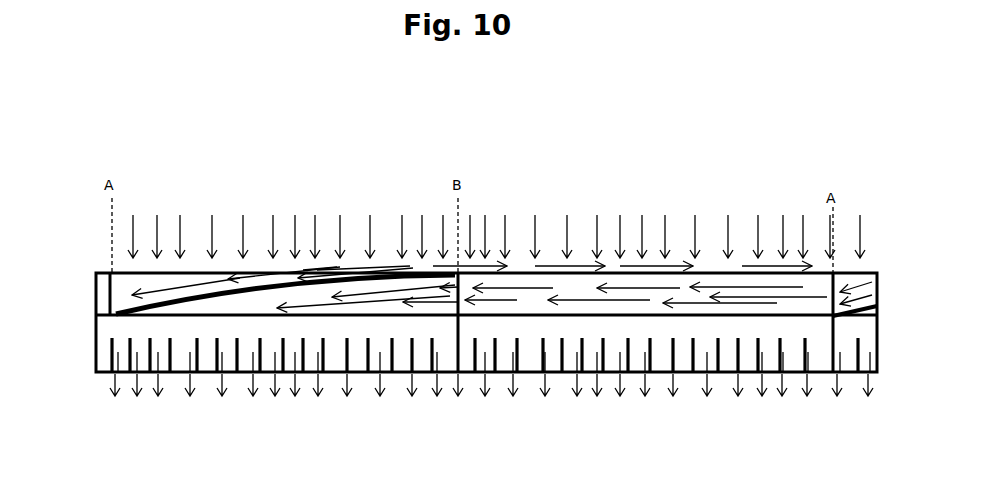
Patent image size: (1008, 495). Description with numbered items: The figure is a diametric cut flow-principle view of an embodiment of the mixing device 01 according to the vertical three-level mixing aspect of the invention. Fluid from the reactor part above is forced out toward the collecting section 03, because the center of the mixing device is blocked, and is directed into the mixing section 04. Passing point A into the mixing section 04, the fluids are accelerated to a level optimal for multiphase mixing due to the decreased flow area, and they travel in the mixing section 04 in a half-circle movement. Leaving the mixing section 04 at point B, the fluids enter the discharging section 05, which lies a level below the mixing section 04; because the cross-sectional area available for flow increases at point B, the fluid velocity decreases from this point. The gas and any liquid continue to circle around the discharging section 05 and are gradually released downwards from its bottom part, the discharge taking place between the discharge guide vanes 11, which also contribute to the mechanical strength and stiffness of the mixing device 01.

The mixing device 01 is at (725, 134).
The collecting section 03 is at (126, 286).
The mixing section 04 is at (814, 281).
The discharging section 05 is at (178, 329).
The discharge guide vanes 11 is at (431, 353).